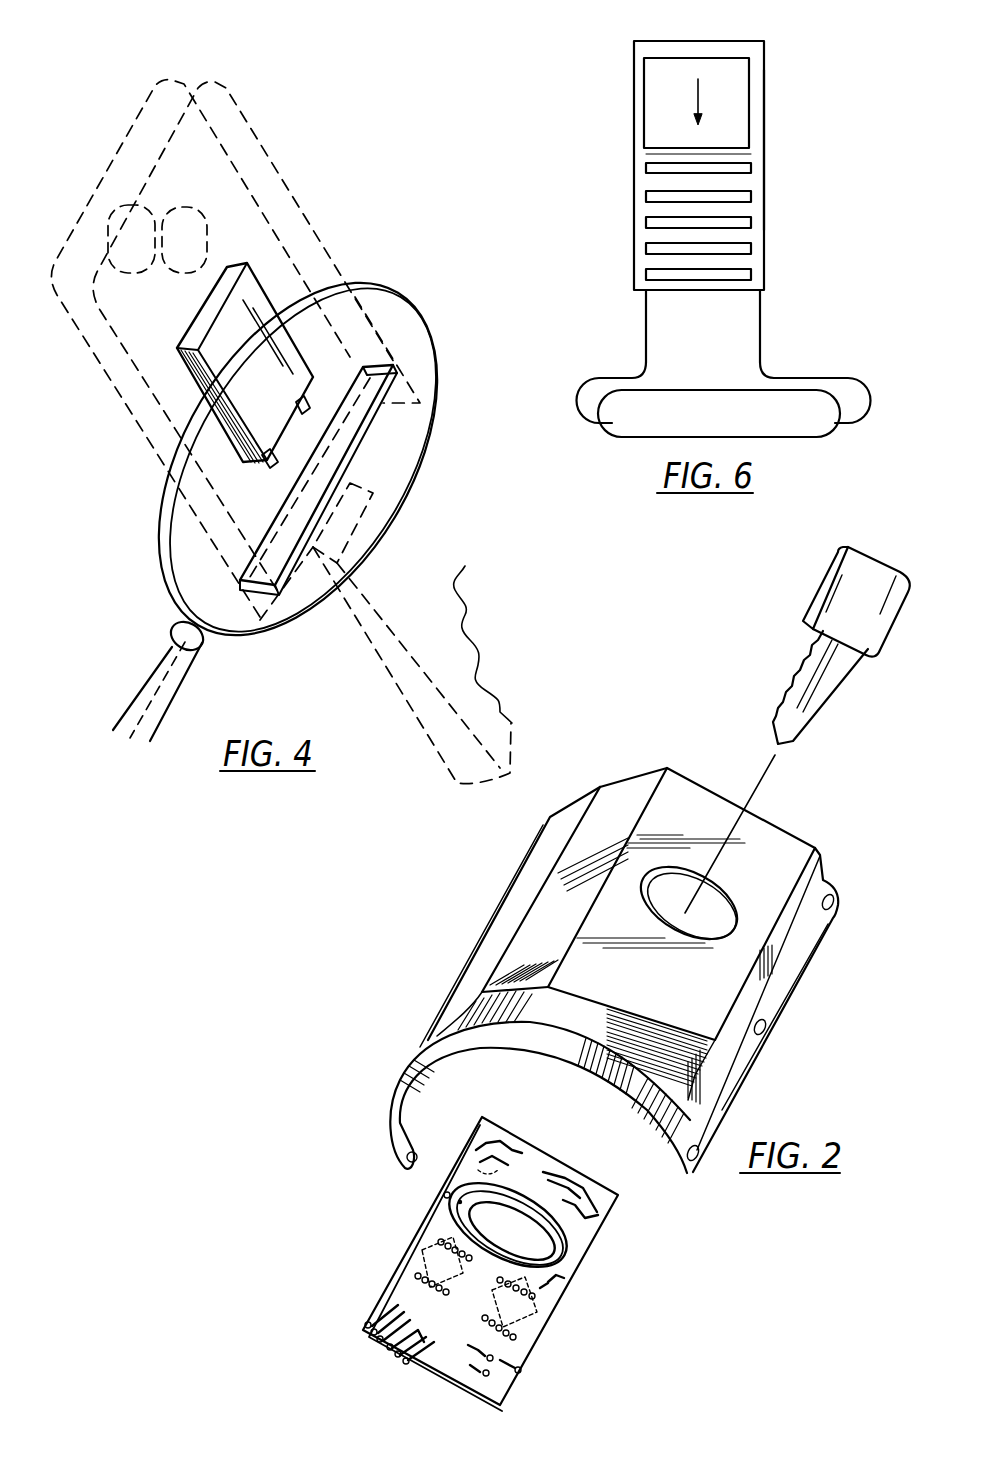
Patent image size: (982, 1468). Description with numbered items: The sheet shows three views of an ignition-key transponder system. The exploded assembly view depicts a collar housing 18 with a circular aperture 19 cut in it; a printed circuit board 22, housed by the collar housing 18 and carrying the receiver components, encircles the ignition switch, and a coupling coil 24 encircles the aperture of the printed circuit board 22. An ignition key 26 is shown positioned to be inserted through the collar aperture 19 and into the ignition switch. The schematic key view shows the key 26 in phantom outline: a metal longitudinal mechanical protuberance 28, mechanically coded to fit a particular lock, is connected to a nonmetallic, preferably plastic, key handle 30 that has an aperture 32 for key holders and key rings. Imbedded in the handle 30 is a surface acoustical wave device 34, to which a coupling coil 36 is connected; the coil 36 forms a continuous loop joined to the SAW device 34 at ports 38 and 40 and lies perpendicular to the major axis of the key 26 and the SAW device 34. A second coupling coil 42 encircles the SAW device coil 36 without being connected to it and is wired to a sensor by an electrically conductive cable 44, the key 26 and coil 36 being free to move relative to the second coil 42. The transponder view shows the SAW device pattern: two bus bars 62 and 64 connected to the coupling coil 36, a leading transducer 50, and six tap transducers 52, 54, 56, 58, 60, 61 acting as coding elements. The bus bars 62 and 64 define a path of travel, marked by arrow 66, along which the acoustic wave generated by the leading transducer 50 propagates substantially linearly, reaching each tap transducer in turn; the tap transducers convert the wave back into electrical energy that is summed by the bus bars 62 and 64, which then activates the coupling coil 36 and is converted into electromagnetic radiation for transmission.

In FIG. 2, the collar housing 18 is at (555, 891).
In FIG. 2, the circular aperture 19 is at (712, 888).
In FIG. 2, the printed circuit board 22 is at (538, 1323).
In FIG. 2, the coupling coil 24 is at (447, 1181).
In FIG. 6, the ignition key 26 is at (783, 283).
In FIG. 4, the ignition key 26 is at (358, 246).
In FIG. 2, the ignition key 26 is at (797, 677).
In FIG. 4, the longitudinal mechanical protuberance 28 is at (483, 634).
In FIG. 4, the key handle 30 is at (108, 368).
In FIG. 4, the aperture 32 is at (130, 206).
In FIG. 4, the surface acoustical wave (SAW) device 34 is at (254, 374).
In FIG. 6, the coupling coil 36 is at (797, 377).
In FIG. 4, the coupling coil 36 is at (279, 513).
In FIG. 4, the port 38 is at (278, 460).
In FIG. 4, the port 40 is at (308, 398).
In FIG. 4, the second coupling coil 42 is at (163, 550).
In FIG. 4, the electrically conductive cable 44 is at (148, 668).
In FIG. 6, the leading transducer 50 is at (735, 38).
In FIG. 6, the tap transducer 52 is at (655, 154).
In FIG. 6, the tap transducer 54 is at (659, 183).
In FIG. 6, the tap transducer 56 is at (659, 208).
In FIG. 6, the tap transducer 58 is at (657, 237).
In FIG. 6, the tap transducer 60 is at (657, 266).
In FIG. 6, the tap transducer 61 is at (669, 288).
In FIG. 6, the bus bar 62 is at (634, 91).
In FIG. 6, the bus bar 64 is at (764, 129).
In FIG. 6, the arrow 66 is at (698, 97).